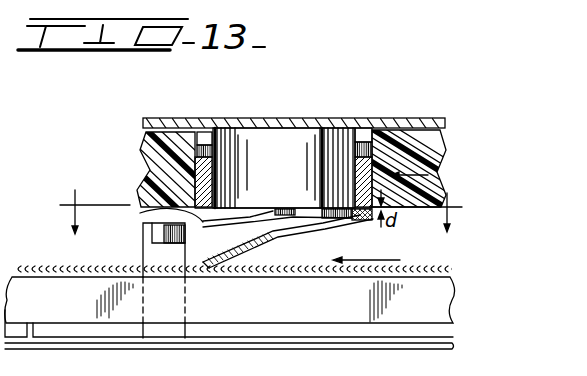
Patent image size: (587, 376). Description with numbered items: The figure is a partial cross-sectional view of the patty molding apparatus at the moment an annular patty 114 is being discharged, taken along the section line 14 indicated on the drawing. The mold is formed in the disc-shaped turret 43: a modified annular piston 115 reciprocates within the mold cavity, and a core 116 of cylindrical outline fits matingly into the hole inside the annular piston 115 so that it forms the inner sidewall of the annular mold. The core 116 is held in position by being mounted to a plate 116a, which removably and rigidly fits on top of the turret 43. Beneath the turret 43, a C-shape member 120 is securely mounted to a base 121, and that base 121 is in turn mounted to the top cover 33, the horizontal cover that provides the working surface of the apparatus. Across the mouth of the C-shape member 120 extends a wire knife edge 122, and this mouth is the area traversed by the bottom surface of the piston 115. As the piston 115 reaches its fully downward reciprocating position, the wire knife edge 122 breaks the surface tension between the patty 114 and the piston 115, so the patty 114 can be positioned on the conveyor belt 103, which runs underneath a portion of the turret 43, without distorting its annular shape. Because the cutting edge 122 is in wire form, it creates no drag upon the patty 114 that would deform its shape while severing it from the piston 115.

The section line 14- 14 is at (248, 222).
The top cover 33 is at (258, 350).
The turret 43 is at (433, 151).
The conveyor belt 103 is at (431, 266).
The patty 114 is at (266, 238).
The piston 115 is at (184, 150).
The core 116 is at (283, 160).
The plate 116a is at (379, 126).
The C-shape member 120 is at (219, 221).
The base 121 is at (162, 252).
The wire knife edge 122 is at (318, 206).